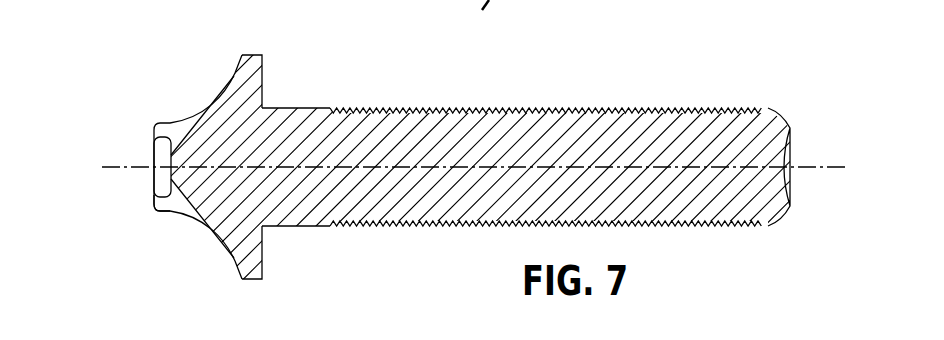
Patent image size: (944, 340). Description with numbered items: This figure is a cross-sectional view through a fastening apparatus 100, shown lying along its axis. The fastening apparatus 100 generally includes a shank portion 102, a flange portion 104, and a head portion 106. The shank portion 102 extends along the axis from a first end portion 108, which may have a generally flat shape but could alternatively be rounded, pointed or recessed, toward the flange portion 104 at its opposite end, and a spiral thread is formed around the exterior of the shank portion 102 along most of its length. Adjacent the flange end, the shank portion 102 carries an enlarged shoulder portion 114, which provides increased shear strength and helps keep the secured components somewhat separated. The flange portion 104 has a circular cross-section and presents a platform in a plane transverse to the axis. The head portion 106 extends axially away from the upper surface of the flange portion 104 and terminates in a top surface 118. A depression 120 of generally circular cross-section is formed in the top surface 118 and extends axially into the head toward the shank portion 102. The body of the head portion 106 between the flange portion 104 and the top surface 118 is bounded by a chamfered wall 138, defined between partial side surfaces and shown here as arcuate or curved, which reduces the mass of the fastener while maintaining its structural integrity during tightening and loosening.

The fastening apparatus 100 is at (390, 103).
The shank portion 102 is at (693, 130).
The flange portion 104 is at (262, 258).
The head portion 106 is at (100, 78).
The first end portion 108 is at (777, 215).
The enlarged shoulder portion 114 is at (292, 108).
The top surface 118 is at (157, 200).
The depression 120 is at (155, 157).
The chamfered wall 138 is at (212, 114).